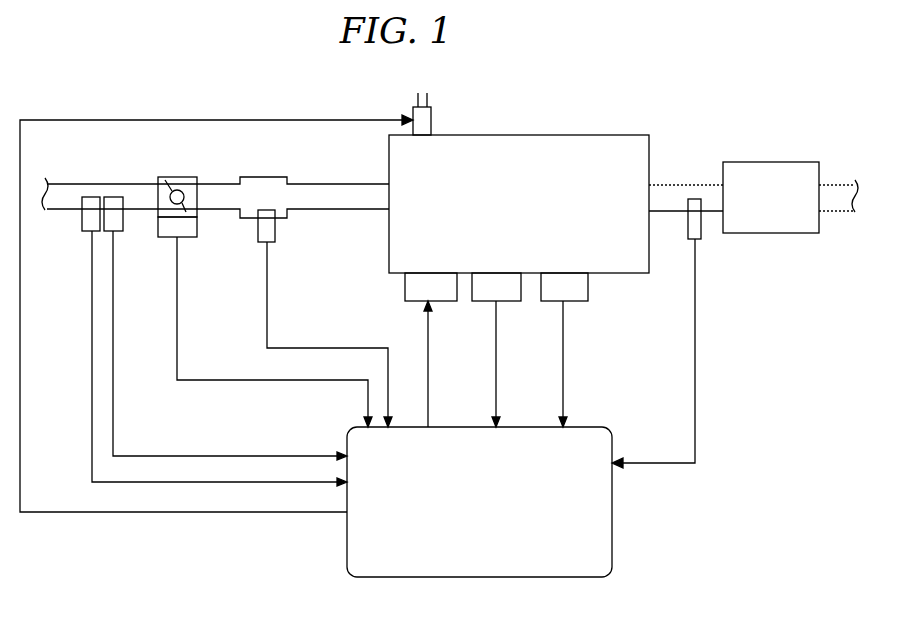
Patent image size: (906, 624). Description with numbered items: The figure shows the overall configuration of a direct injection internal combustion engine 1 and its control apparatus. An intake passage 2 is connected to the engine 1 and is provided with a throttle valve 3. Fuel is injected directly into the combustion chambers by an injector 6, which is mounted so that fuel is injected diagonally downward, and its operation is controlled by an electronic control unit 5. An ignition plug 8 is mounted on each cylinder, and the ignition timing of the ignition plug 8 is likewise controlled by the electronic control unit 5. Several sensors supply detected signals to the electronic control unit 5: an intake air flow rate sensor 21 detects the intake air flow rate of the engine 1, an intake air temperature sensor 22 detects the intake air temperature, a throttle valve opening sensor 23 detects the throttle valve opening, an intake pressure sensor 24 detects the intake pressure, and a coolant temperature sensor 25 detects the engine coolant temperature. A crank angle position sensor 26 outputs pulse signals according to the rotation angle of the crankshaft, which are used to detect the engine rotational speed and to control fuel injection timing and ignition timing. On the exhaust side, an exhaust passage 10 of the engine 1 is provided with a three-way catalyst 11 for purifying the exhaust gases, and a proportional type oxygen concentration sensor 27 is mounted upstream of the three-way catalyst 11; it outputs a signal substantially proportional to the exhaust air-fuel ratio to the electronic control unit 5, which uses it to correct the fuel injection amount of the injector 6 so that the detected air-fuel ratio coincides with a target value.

The direct injection internal combustion engine 1 is at (595, 134).
The intake passage 2 is at (328, 210).
The throttle valve 3 is at (163, 183).
The electronic control unit 5 is at (540, 425).
The injector 6 is at (431, 118).
The ignition plug 8 is at (447, 302).
The exhaust passage 10 is at (690, 184).
The three-way catalyst 11 is at (775, 161).
The intake air flow rate sensor 21 is at (88, 232).
The intake air temperature sensor 22 is at (116, 232).
The throttle valve opening sensor 23 is at (187, 238).
The intake pressure sensor 24 is at (272, 243).
The coolant temperature sensor 25 is at (510, 302).
The crank angle position sensor 26 is at (578, 302).
The proportional type oxygen concentration sensor 27 is at (698, 240).